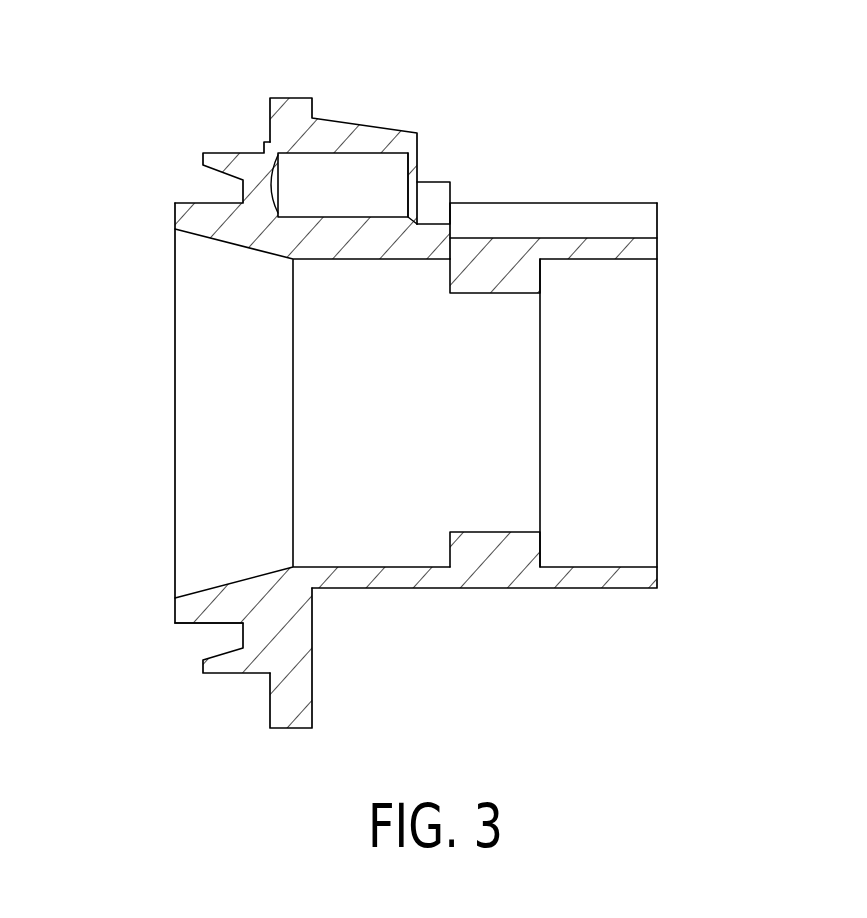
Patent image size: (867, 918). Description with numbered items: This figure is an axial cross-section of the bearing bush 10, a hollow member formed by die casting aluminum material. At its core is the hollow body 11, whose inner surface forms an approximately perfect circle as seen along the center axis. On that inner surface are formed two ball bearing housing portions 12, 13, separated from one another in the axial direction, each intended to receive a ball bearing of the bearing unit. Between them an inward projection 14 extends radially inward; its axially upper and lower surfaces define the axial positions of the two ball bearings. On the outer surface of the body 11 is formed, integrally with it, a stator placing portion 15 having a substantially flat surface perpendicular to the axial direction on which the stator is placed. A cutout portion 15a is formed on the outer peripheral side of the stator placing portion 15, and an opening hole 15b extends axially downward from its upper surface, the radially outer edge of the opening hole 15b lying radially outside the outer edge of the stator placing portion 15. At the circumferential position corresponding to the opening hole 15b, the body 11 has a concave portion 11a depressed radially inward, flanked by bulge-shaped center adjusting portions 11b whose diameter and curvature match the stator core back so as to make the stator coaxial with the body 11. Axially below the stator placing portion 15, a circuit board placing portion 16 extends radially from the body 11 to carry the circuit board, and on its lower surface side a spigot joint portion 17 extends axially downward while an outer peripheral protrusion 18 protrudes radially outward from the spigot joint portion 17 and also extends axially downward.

The bearing bush 10 is at (73, 70).
The body 11 is at (547, 580).
The concave portion 11a is at (575, 218).
The center adjusting portion 11b is at (560, 202).
The ball bearing housing portion 12 is at (613, 523).
The ball bearing housing portion 13 is at (375, 293).
The inward projection 14 is at (492, 530).
The stator placing portion 15 is at (453, 205).
The cutout portion 15a is at (436, 157).
The opening hole 15b is at (352, 182).
The circuit board placing portion 16 is at (292, 702).
The spigot joint portion 17 is at (193, 215).
The outer peripheral protrusion 18 is at (228, 665).